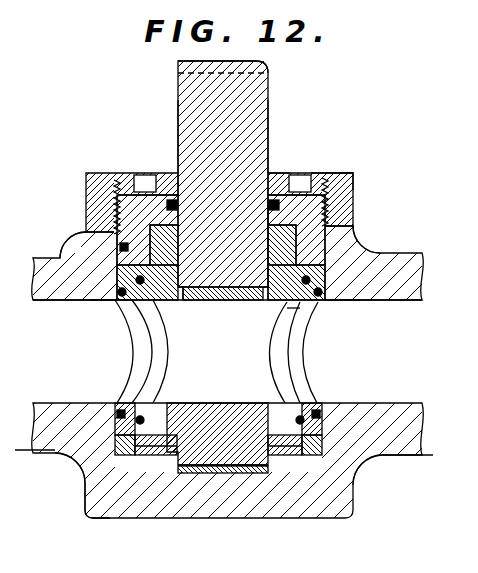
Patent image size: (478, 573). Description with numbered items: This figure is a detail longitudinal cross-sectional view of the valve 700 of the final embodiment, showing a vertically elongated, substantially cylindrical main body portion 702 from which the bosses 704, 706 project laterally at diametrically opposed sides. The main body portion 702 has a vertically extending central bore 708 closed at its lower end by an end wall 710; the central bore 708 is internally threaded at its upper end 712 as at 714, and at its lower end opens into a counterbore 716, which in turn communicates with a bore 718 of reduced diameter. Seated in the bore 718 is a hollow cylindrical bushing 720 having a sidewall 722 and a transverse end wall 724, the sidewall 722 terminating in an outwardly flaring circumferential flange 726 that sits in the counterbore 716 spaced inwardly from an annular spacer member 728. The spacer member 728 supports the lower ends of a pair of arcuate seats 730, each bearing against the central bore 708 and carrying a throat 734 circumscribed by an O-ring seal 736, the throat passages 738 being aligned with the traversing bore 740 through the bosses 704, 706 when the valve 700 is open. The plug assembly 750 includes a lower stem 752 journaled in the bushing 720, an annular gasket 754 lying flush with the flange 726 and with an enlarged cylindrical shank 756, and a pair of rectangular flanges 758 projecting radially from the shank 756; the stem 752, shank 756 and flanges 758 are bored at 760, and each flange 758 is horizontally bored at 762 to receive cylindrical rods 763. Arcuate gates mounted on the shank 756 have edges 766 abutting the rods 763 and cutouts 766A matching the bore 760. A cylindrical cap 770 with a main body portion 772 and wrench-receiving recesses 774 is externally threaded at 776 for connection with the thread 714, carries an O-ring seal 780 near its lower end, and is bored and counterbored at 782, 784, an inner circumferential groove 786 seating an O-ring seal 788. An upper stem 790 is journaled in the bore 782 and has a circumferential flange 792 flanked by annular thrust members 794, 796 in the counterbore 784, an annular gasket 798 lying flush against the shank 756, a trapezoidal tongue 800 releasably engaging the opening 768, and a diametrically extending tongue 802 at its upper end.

The valve 700 is at (365, 194).
The main body portion 702 is at (86, 181).
The boss 704 is at (43, 258).
The boss 706 is at (420, 254).
The central bore 708 is at (366, 250).
The end wall 710 is at (227, 520).
The upper end of central bore 712 is at (345, 173).
The thread 714 is at (321, 173).
The counterbore 716 is at (323, 453).
The bore of reduced diameter 718 is at (340, 248).
The bushing 720 is at (252, 478).
The sidewall 722 is at (110, 518).
The end wall 724 is at (185, 473).
The circumferential flange 726 is at (137, 435).
The spacer member 728 is at (353, 487).
The arcuate seat 730 is at (83, 300).
The throat 734 is at (85, 468).
The O-ring seal 736 is at (115, 302).
The passage 738 is at (142, 352).
The traversing bore 740 is at (35, 460).
The plug assembly 750 is at (305, 400).
The lower stem 752 is at (148, 465).
The gasket 754 is at (300, 457).
The shank 756 is at (84, 504).
The flange 758 is at (138, 398).
The bore 760 is at (215, 303).
The horizontal bore 762 is at (333, 277).
The cylindrical rod 763 is at (168, 305).
The edge 766 is at (153, 338).
The cutout 766A is at (153, 362).
The opening 768 is at (183, 302).
The cap 770 is at (279, 172).
The main body portion 772 is at (167, 172).
The wrench-receiving recess 774 is at (296, 173).
The external thread 776 is at (116, 174).
The O-ring seal 780 is at (352, 258).
The bore 782 is at (270, 173).
The counterbore 784 is at (113, 225).
The inner circumferential groove 786 is at (355, 176).
The O-ring seal 788 is at (156, 173).
The upper stem 790 is at (262, 102).
The circumferential flange 792 is at (322, 250).
The thrust member 794 is at (117, 204).
The thrust member 796 is at (86, 234).
The gasket 798 is at (264, 328).
The trapezoidal tongue 800 is at (256, 312).
The tongue 802 is at (266, 62).